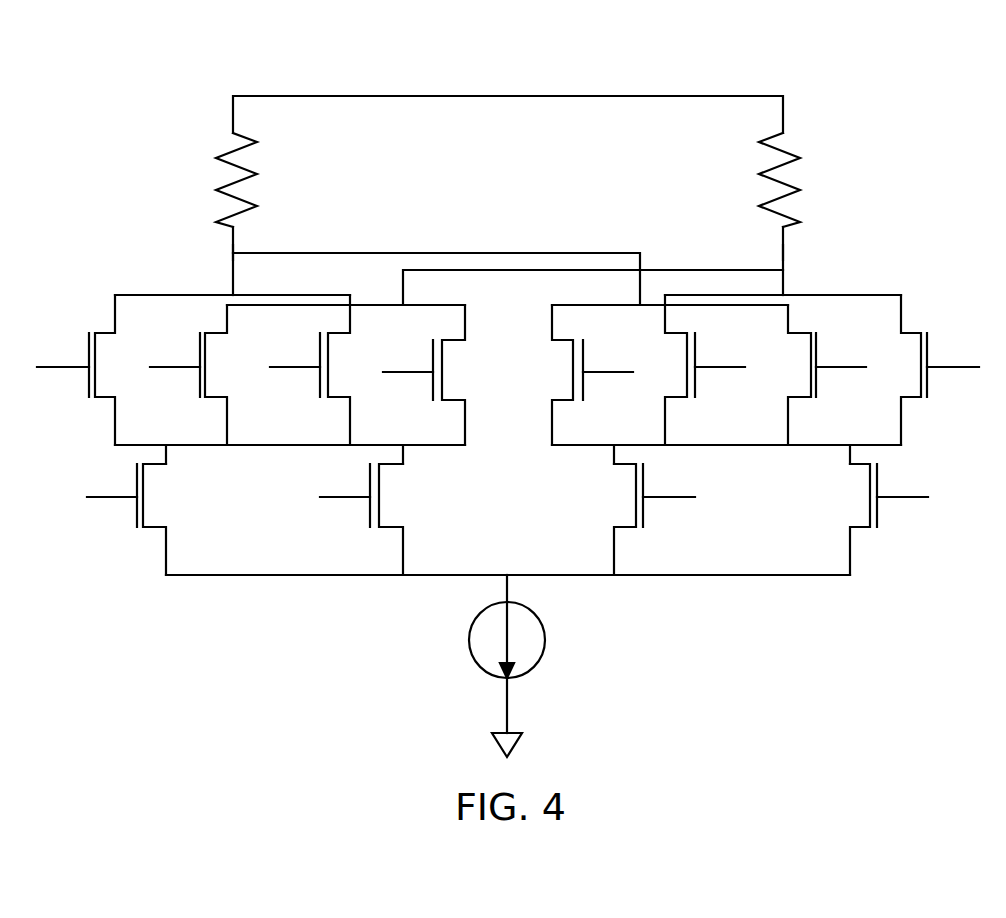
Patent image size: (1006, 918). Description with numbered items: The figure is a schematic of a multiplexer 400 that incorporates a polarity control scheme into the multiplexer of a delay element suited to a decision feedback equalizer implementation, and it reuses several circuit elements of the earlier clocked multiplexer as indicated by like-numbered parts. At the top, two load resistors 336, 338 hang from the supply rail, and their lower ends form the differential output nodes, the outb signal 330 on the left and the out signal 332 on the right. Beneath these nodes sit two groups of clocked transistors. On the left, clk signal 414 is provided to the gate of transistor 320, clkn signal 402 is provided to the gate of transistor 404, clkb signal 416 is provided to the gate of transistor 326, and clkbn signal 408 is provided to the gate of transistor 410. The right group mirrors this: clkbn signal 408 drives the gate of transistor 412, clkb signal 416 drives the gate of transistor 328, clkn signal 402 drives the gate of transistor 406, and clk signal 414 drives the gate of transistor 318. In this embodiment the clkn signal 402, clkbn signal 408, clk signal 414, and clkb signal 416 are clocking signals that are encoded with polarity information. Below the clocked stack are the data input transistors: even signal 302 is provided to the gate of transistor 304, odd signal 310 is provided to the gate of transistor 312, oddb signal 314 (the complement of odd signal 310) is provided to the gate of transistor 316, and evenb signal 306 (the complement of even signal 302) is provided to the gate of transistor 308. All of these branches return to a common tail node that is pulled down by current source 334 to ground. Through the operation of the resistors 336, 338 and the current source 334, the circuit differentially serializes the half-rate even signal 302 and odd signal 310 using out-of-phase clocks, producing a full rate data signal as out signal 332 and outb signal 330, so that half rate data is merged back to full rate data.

The multiplexer 400 is at (899, 93).
The resistor 336 is at (228, 163).
The resistor 338 is at (788, 163).
The outb signal 330 is at (233, 246).
The out signal 332 is at (784, 256).
The transistor 320 is at (96, 368).
The transistor 404 is at (207, 376).
The transistor 326 is at (330, 372).
The transistor 410 is at (445, 376).
The transistor 412 is at (573, 361).
The transistor 328 is at (687, 368).
The transistor 406 is at (809, 372).
The transistor 318 is at (920, 363).
The clk signal 414 is at (62, 372).
The clkn signal 402 is at (180, 375).
The clkb signal 416 is at (308, 366).
The clkbn signal 408 is at (412, 378).
The transistor 304 is at (145, 497).
The transistor 312 is at (382, 497).
The transistor 316 is at (634, 495).
The transistor 308 is at (868, 490).
The even signal 302 is at (112, 500).
The odd signal 310 is at (335, 500).
The oddb signal 314 is at (670, 500).
The evenb signal 306 is at (898, 500).
The current source 334 is at (546, 641).